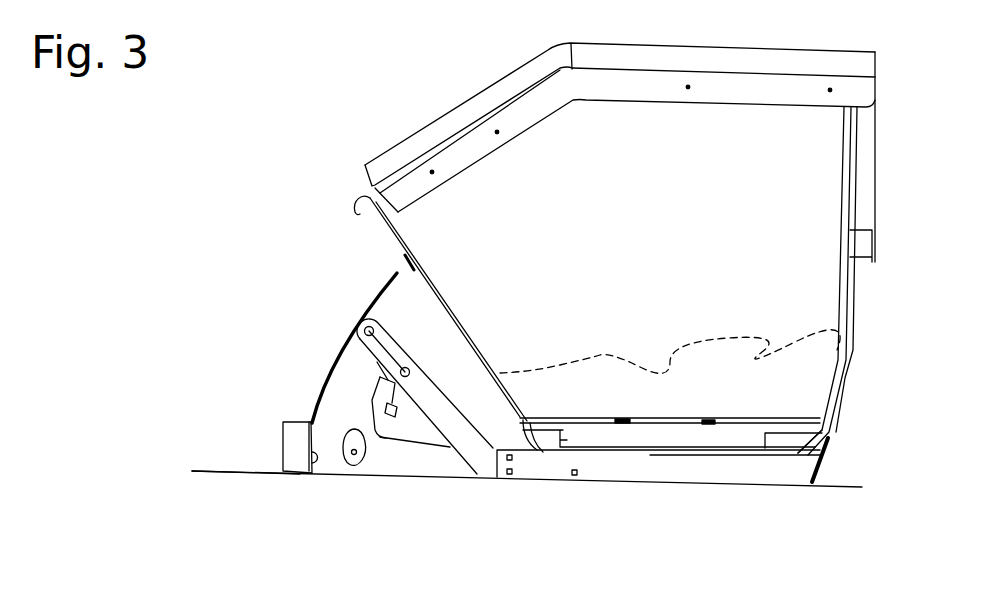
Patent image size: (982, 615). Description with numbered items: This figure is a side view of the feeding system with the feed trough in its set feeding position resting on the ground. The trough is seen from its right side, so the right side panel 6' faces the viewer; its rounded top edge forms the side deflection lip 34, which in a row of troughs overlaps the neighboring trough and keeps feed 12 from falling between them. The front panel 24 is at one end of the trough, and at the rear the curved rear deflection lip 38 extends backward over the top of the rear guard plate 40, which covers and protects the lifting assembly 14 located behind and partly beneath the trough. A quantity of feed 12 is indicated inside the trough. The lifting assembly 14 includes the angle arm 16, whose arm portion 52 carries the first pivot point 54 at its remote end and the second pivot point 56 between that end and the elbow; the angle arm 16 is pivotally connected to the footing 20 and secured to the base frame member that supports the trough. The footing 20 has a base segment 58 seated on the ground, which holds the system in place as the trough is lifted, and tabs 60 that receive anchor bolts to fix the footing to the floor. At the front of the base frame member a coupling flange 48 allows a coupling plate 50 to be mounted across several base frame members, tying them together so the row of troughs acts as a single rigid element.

The right side panel 6' is at (462, 119).
The feed 12 is at (697, 401).
The lifting assembly 14 is at (385, 540).
The angle arm 16 is at (457, 432).
The footing 20 is at (343, 408).
The front panel 24 is at (246, 543).
The side deflection lip 34 is at (518, 82).
The rear deflection lip 38 is at (364, 194).
The rear guard plate 40 is at (347, 358).
The coupling flange 48 is at (825, 445).
The coupling plate 50 is at (827, 452).
The arm portion 52 is at (340, 322).
The first pivot point 54 is at (369, 325).
The second pivot point 56 is at (408, 366).
The base segment 58 is at (407, 462).
The tab 60 is at (283, 430).